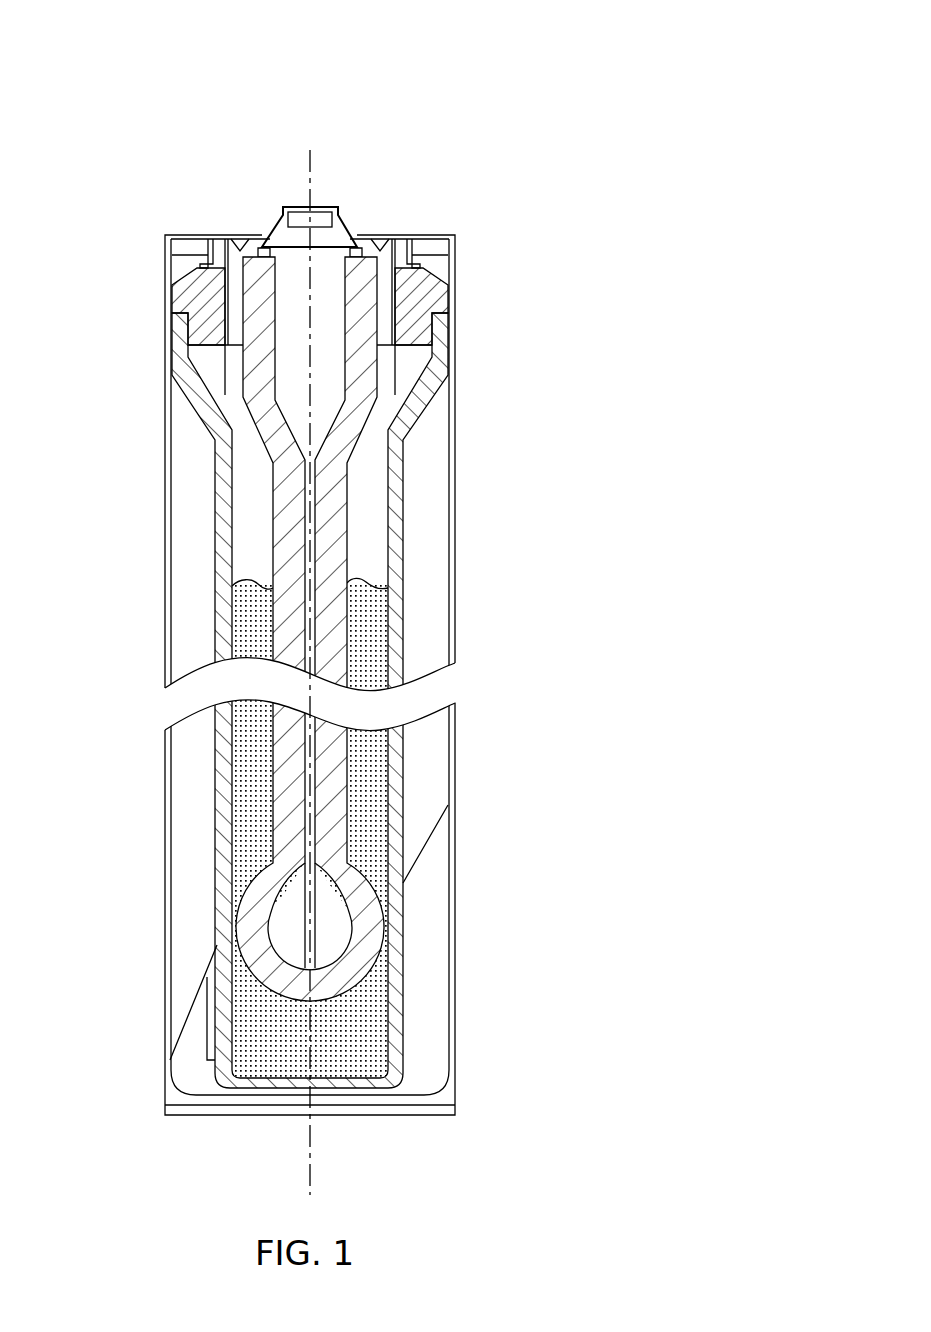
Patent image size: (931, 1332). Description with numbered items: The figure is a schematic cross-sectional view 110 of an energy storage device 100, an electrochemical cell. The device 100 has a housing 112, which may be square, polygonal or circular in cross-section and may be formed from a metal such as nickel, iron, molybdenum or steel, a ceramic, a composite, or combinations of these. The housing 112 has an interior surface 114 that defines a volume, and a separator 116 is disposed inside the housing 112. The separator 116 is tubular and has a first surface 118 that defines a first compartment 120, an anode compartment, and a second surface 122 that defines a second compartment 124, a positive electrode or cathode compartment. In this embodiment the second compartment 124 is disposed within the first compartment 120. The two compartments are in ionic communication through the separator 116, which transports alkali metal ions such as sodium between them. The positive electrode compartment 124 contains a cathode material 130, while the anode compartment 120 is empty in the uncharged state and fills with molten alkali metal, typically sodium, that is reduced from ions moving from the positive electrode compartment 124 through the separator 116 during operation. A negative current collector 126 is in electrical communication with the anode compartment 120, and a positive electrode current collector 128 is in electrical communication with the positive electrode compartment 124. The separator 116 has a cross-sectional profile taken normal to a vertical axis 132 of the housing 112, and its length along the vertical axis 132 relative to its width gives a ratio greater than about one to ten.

The energy storage device 100 is at (335, 599).
The cross-sectional view 110 is at (464, 230).
The housing 112 is at (460, 359).
The interior surface 114 is at (185, 862).
The separator 116 is at (408, 491).
The first surface 118 is at (404, 760).
The first compartment 120 is at (422, 962).
The second surface 122 is at (293, 629).
The second compartment 124 is at (250, 557).
The negative current collector 126 is at (422, 845).
The positive electrode current collector 128 is at (372, 915).
The cathode material 130 is at (248, 627).
The vertical axis 132 is at (311, 1155).